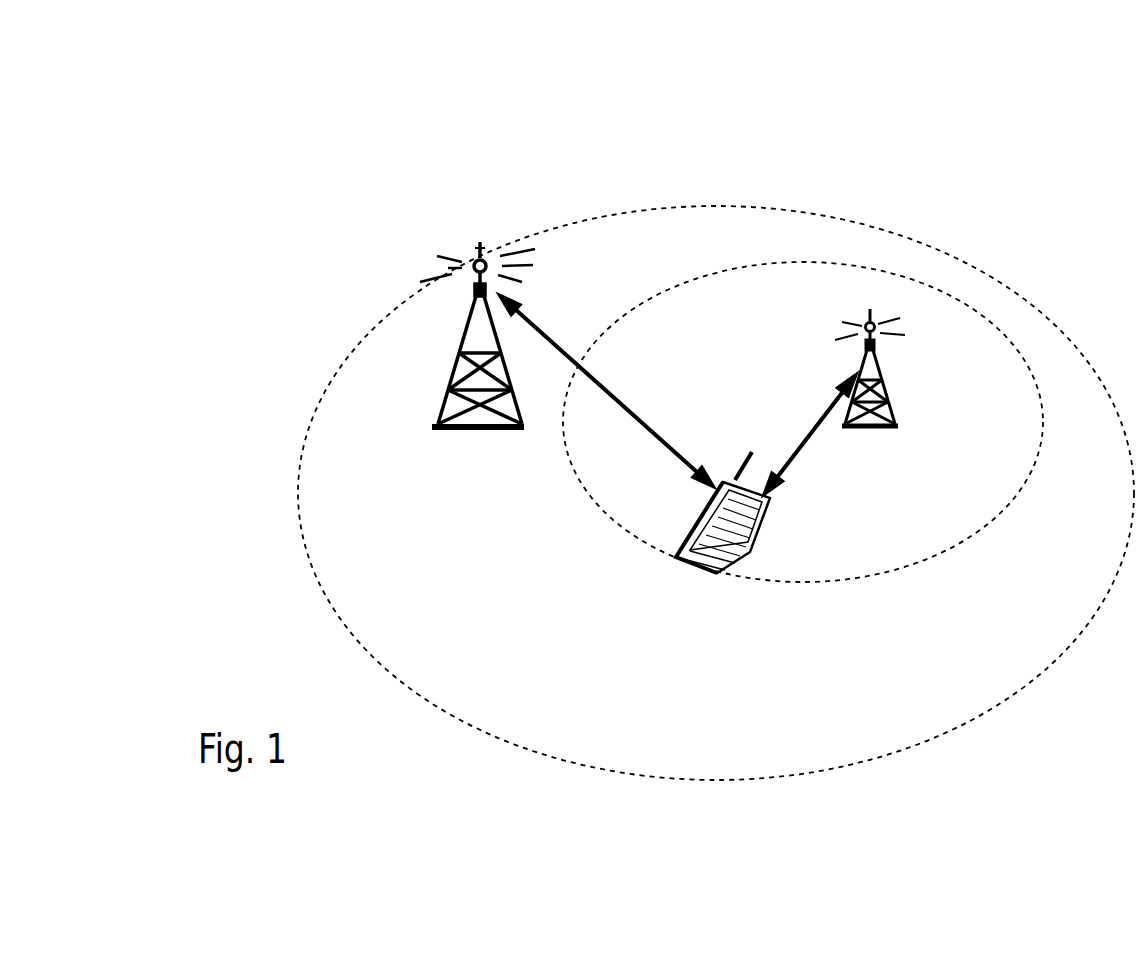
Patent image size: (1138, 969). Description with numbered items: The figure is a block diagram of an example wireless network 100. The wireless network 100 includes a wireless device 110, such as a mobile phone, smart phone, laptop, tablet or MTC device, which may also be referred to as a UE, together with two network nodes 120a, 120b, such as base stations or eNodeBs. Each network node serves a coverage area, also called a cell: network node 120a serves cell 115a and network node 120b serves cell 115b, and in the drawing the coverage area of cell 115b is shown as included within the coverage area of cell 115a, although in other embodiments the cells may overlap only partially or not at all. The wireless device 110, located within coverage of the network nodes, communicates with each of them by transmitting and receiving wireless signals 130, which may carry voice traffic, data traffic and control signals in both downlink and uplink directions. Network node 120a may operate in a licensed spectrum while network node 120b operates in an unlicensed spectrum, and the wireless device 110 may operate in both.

The wireless network 100 is at (688, 155).
The wireless device 110 is at (698, 578).
The cell 115a is at (716, 493).
The cell 115b is at (803, 422).
The network node 120a is at (456, 362).
The network node 120b is at (852, 358).
The wireless signals 130 is at (677, 396).